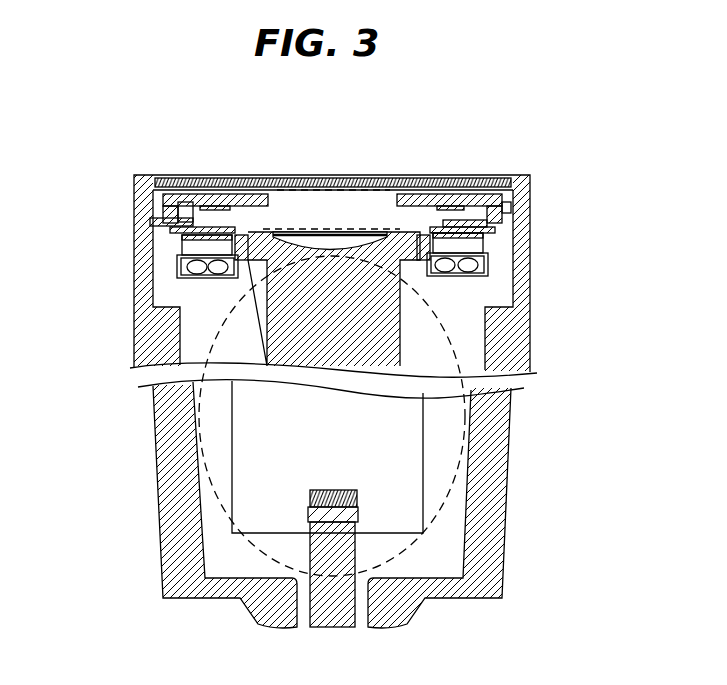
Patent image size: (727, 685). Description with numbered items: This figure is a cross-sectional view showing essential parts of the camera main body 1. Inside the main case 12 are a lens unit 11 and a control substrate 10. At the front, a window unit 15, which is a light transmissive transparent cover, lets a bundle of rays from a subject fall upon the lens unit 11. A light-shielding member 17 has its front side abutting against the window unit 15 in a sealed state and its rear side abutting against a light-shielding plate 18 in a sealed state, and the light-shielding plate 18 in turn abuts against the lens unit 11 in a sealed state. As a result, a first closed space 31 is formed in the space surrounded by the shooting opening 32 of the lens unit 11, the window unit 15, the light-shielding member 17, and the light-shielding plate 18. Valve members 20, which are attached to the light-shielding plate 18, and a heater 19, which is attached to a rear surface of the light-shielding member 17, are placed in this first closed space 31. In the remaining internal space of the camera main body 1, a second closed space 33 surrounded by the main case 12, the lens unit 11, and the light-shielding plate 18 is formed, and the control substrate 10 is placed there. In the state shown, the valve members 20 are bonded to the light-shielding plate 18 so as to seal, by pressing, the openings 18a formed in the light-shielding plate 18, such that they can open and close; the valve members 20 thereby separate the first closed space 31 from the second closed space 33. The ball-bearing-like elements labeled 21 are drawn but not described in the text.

The camera main body 1 is at (512, 492).
The control substrate 10 is at (243, 462).
The lens unit 11 is at (280, 323).
The main case 12 is at (170, 415).
The window unit 15 is at (408, 182).
The light-shielding member 17 is at (255, 193).
The light-shielding plate 18 is at (160, 228).
The openings 18a is at (177, 240).
The heater 19 is at (216, 200).
The valve members 20 is at (197, 222).
The ball bearing 21 is at (180, 270).
The first closed space 31 is at (350, 202).
The shooting opening 32 is at (320, 246).
The second closed space 33 is at (453, 433).